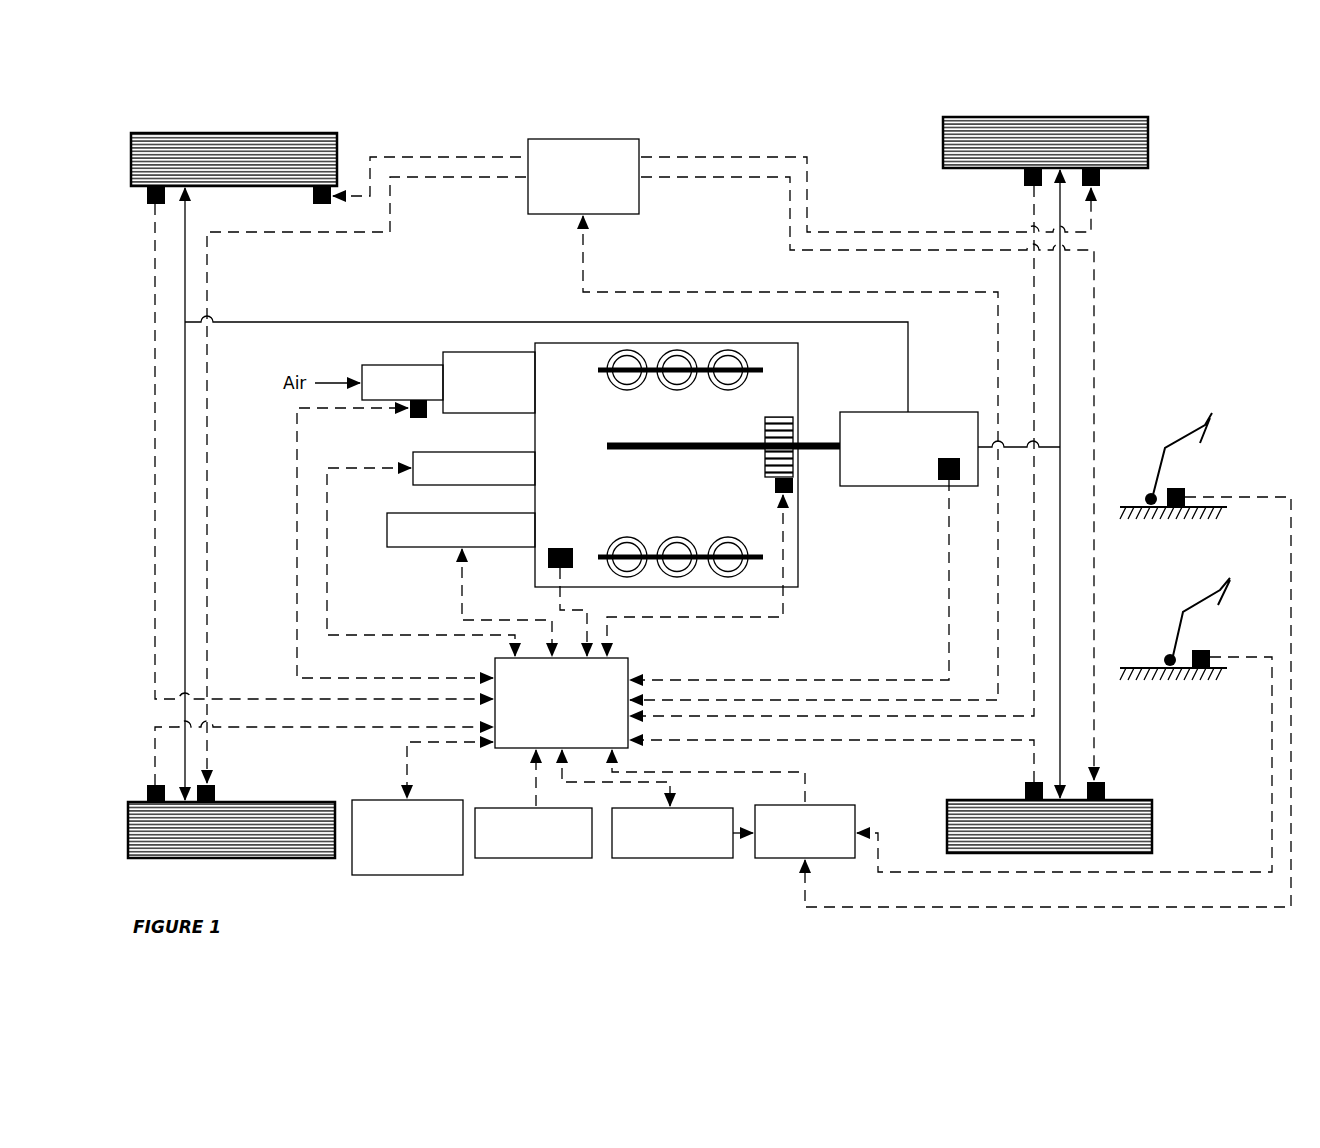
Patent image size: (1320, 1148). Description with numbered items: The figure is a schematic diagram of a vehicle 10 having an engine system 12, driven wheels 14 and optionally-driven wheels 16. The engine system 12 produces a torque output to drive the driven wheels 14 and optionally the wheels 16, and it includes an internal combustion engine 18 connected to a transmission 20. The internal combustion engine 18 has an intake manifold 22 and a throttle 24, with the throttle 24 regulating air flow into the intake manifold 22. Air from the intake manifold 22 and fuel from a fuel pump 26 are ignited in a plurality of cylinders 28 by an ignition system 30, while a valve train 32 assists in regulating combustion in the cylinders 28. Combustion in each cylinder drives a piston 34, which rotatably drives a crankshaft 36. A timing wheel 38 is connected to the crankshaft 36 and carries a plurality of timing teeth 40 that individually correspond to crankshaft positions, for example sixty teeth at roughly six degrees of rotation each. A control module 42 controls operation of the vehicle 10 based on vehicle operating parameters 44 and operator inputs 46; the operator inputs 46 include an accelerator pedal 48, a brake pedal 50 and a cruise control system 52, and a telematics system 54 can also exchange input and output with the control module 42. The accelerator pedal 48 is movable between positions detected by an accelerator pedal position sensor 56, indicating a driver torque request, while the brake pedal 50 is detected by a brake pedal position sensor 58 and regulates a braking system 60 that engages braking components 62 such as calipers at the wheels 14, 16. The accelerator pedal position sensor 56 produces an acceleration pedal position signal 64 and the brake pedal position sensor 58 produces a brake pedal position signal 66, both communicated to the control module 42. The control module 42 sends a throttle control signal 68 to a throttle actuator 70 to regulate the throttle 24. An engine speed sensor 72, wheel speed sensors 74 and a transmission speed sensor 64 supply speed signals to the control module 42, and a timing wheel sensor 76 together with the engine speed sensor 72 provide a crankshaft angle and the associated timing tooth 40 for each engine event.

The vehicle 10 is at (1122, 316).
The engine system 12 is at (824, 548).
The driven wheels 14 is at (277, 133).
The optionally-driven wheels 16 is at (1025, 117).
The internal combustion engine 18 is at (666, 465).
The transmission 20 is at (909, 449).
The intake manifold 22 is at (452, 352).
The throttle 24 is at (370, 365).
The fuel pump 26 is at (444, 452).
The cylinders 28 is at (672, 390).
The ignition system 30 is at (410, 513).
The valve train 32 is at (598, 370).
The piston 34 is at (622, 389).
The crankshaft 36 is at (607, 448).
The timing wheel 38 is at (765, 479).
The timing teeth 40 is at (765, 425).
The control module 42 is at (561, 703).
The vehicle operating parameters 44 is at (530, 858).
The operator inputs 46 is at (775, 858).
The accelerator pedal 48 is at (1155, 492).
The brake pedal 50 is at (1175, 634).
The cruise control system 52 is at (665, 858).
The telematics system 54 is at (422, 808).
The accelerator pedal position sensor 56 is at (1182, 488).
The brake pedal position sensor 58 is at (1205, 650).
The braking system 60 is at (1122, 212).
The braking components 62 is at (312, 192).
The acceleration pedal position signal 64 is at (960, 480).
The brake pedal position signal 66 is at (1272, 790).
The throttle control signal 68 is at (297, 420).
The throttle actuator 70 is at (418, 420).
The engine speed sensor 72 is at (555, 548).
The wheel speed sensors 74 is at (147, 196).
The timing wheel sensor 76 is at (793, 490).